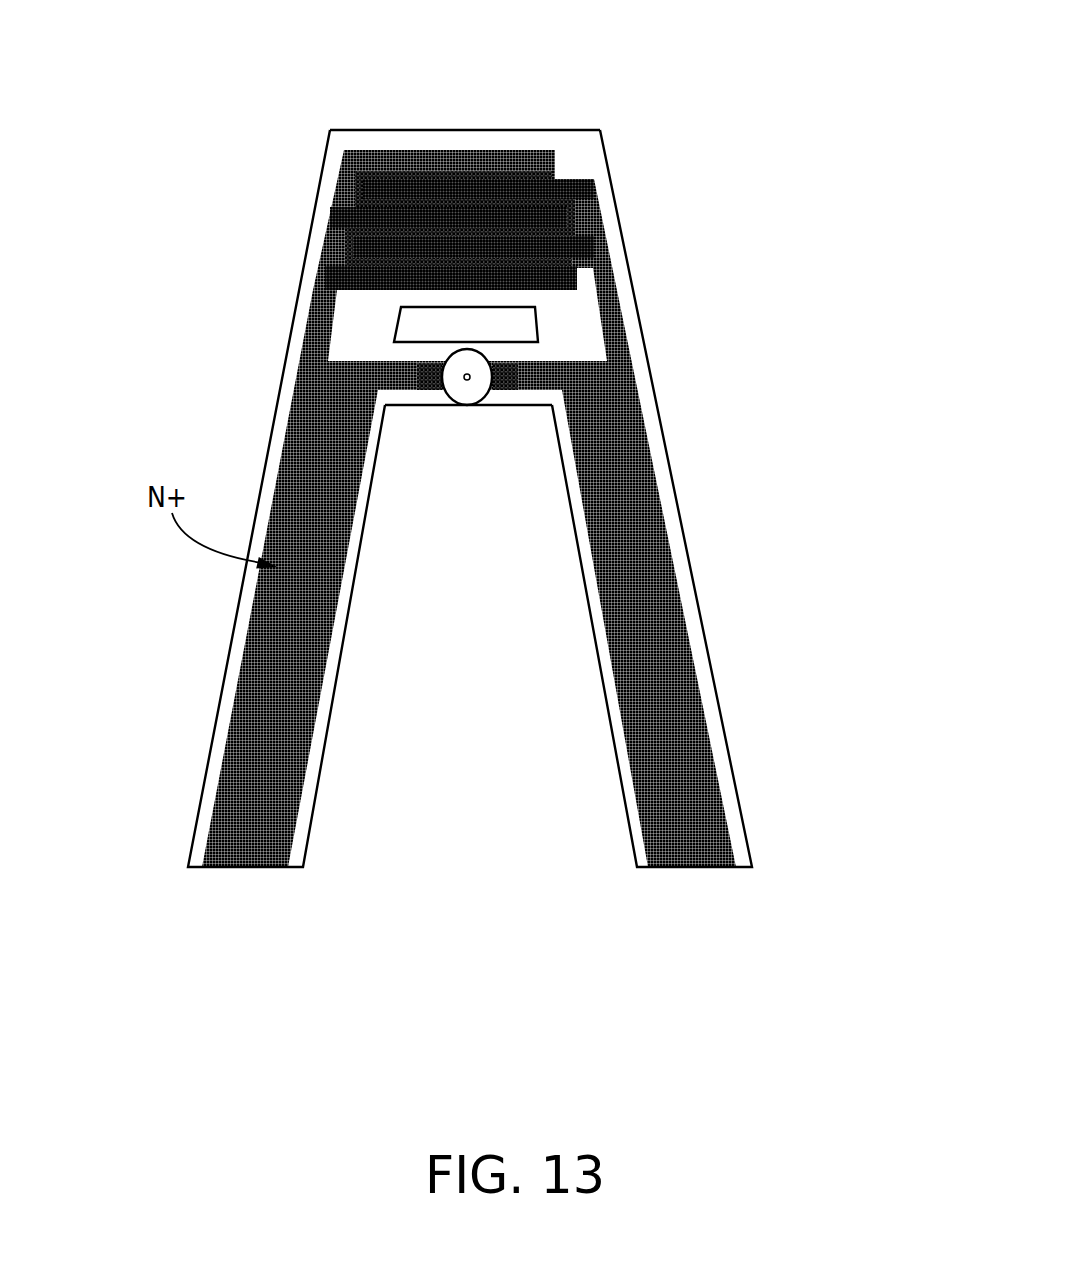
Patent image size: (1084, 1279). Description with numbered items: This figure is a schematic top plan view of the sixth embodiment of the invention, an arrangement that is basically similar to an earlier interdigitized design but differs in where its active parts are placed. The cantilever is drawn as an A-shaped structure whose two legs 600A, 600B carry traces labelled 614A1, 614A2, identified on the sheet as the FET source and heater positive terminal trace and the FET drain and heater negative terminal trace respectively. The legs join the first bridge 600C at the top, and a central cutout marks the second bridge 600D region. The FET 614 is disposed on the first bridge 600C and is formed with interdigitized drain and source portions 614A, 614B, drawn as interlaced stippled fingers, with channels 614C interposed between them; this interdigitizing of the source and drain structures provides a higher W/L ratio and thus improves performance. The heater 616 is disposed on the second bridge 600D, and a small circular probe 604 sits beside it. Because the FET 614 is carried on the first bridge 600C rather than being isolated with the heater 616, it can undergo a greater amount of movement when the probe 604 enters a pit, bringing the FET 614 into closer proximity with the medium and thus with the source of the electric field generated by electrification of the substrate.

The left leg of substrate / trace region 600A is at (202, 822).
The right leg of substrate / trace region 600B is at (731, 790).
The first bridge 600C is at (538, 128).
The second bridge 600D is at (407, 405).
The probe 604 is at (458, 404).
The FET 614 is at (514, 148).
The drain portion 614A is at (566, 275).
The source portion 614B is at (358, 249).
The channel 614C is at (376, 188).
The FET source and heater positive terminal trace 614A1 is at (237, 850).
The FET drain and heater negative terminal trace 614A2 is at (700, 867).
The heater 616 is at (518, 356).